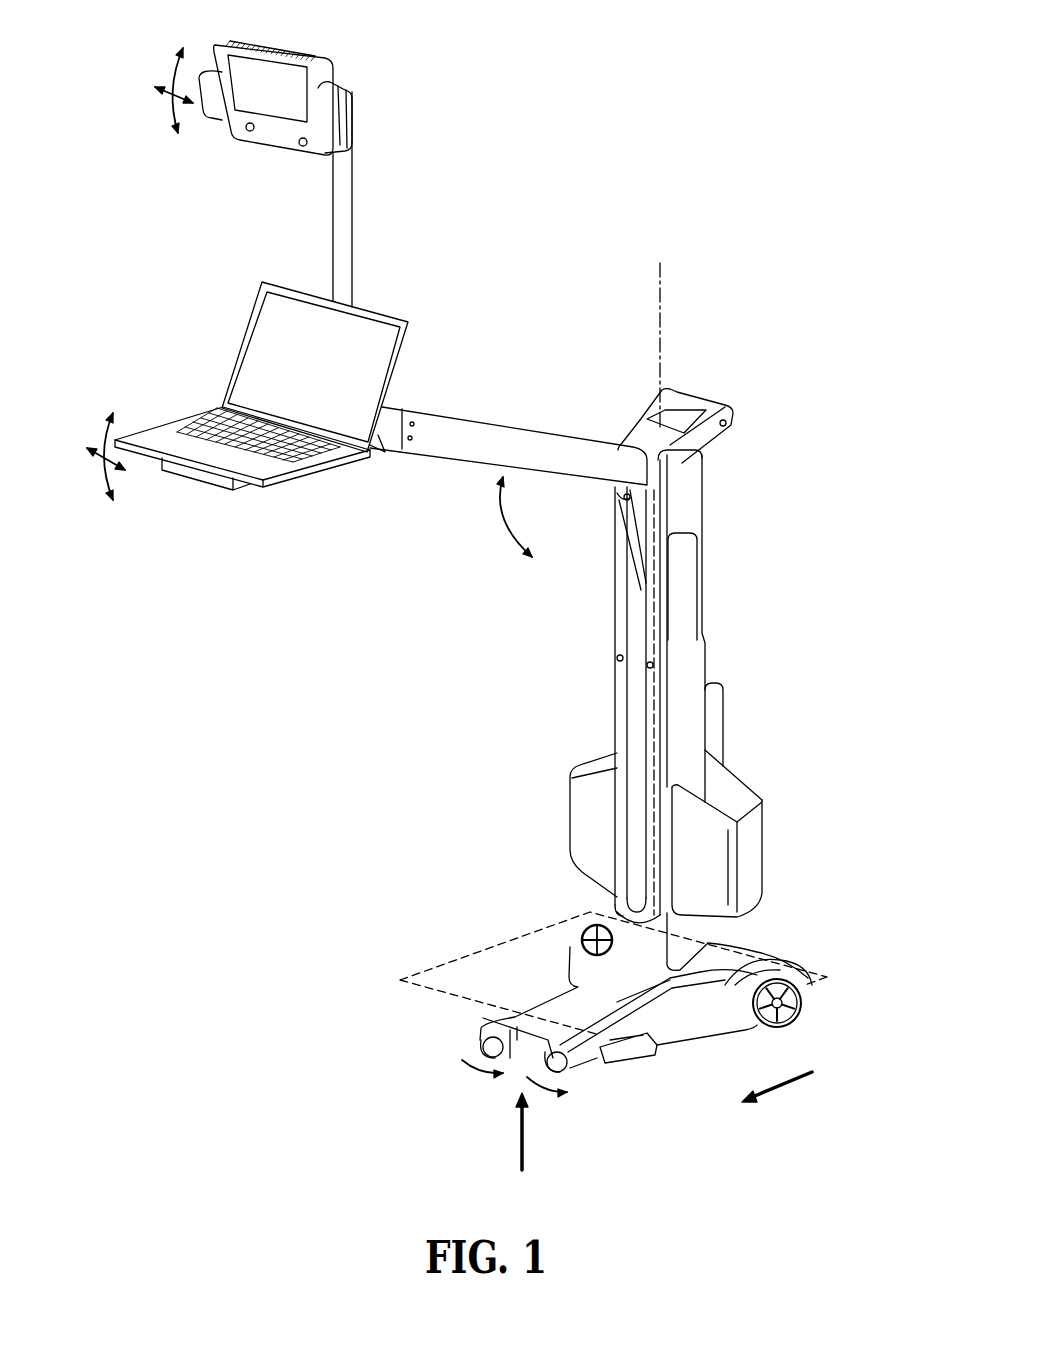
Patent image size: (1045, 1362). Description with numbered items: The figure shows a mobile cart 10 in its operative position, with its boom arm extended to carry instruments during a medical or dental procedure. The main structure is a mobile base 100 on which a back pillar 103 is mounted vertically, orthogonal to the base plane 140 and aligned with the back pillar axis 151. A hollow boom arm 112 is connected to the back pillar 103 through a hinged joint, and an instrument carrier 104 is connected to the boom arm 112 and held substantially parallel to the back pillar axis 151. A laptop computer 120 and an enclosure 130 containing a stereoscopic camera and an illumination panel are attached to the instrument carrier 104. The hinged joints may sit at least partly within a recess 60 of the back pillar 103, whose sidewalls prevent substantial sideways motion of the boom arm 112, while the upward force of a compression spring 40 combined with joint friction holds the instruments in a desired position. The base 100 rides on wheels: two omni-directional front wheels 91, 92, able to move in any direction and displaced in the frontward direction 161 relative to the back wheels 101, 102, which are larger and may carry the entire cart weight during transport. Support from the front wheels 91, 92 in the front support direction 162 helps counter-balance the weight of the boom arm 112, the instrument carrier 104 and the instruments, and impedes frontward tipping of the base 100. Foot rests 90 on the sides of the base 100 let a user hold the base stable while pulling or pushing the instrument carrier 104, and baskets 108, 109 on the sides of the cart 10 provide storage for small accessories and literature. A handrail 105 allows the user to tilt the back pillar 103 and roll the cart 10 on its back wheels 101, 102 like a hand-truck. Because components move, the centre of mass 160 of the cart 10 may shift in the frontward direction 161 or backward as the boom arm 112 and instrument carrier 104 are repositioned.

The cart 10 is at (715, 90).
The compression spring 40 is at (635, 540).
The recess 60 is at (637, 675).
The foot rest 90 is at (625, 1060).
The front wheel 91 is at (562, 1070).
The front wheel 92 is at (487, 1048).
The mobile base 100 is at (690, 1010).
The back wheel 101 is at (797, 1017).
The back wheel 102 is at (563, 957).
The back pillar 103 is at (687, 502).
The instrument carrier 104 is at (345, 230).
The handrail 105 is at (717, 405).
The basket 108 is at (752, 848).
The basket 109 is at (580, 805).
The boom arm 112 is at (534, 447).
The laptop computer 120 is at (290, 470).
The enclosure 130 is at (278, 137).
The base plane 140 is at (445, 960).
The back pillar axis 151 is at (660, 302).
The centre of mass 160 is at (590, 928).
The frontward direction 161 is at (793, 1085).
The front support direction 162 is at (521, 1153).